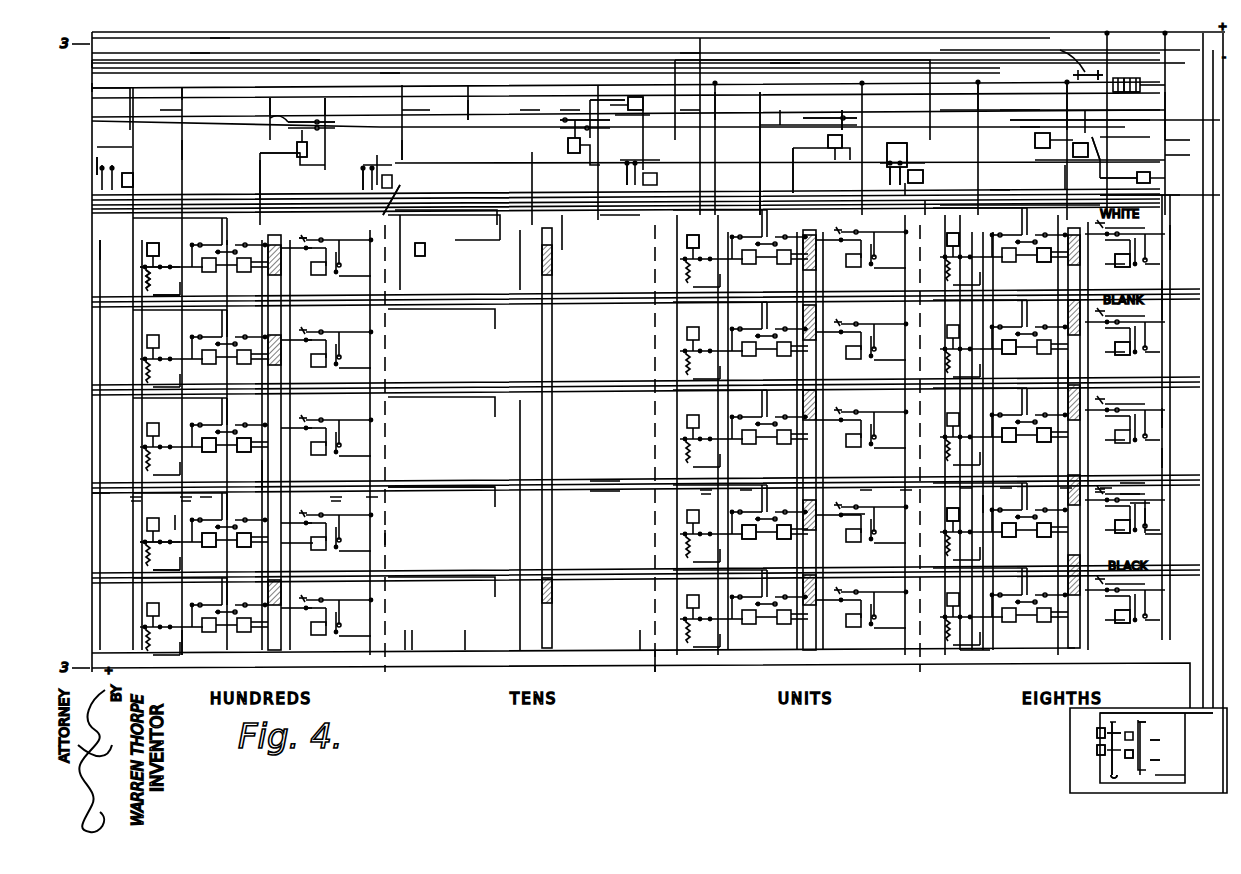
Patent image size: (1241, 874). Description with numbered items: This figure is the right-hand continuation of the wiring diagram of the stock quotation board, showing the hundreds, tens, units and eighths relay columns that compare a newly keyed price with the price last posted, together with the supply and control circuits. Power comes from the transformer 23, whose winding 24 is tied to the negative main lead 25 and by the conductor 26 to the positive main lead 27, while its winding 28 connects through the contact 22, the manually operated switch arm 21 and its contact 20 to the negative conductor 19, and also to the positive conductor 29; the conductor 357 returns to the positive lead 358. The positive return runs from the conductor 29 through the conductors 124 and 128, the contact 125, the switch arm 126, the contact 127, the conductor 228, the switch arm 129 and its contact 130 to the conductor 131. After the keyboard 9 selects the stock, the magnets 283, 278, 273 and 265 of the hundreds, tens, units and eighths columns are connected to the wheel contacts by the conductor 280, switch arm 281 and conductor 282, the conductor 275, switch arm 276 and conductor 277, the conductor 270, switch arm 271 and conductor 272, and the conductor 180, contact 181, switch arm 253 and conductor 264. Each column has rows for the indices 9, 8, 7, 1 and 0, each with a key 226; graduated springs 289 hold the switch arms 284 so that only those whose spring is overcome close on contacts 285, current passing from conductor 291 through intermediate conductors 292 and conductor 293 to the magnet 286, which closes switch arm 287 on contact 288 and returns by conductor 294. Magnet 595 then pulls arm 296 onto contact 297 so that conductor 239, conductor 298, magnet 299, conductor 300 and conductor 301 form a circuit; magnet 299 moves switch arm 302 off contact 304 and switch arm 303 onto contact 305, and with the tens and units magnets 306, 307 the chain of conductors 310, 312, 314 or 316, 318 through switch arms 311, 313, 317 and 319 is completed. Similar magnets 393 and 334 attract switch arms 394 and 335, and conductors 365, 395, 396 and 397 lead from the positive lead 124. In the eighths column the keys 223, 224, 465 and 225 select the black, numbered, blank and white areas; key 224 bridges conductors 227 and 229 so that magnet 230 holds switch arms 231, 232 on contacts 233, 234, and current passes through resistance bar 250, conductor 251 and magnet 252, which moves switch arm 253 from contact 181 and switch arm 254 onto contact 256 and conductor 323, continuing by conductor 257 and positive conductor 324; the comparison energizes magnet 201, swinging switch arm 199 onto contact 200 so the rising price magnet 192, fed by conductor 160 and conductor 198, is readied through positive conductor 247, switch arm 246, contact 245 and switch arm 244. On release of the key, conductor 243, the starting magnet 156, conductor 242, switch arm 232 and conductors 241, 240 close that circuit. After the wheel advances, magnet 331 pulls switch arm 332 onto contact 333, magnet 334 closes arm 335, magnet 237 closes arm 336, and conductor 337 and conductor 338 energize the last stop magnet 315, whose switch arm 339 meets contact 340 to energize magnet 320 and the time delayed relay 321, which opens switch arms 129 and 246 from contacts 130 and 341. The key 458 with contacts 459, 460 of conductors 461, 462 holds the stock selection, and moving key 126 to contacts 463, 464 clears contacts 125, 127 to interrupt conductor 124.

The bus conductor 180 is at (92, 67).
The conductor 280 is at (92, 88).
The conductor 198 is at (200, 56).
The conductor 160 is at (218, 50).
The conductor 270 is at (312, 60).
The conductor 275 is at (390, 73).
The conductor 192 is at (182, 92).
The contact 302 is at (275, 98).
The contact 303 is at (325, 98).
The conductor 310 is at (420, 110).
The conductor 316 is at (468, 100).
The conductor 311 is at (532, 110).
The conductor 201 is at (565, 110).
The conductor 199 is at (605, 100).
The conductor 357 is at (690, 50).
The conductor 358 is at (790, 50).
The conductor 318 is at (690, 110).
The conductor 312 is at (730, 110).
The conductor 319 is at (765, 92).
The conductor 313 is at (842, 110).
The conductor 314 is at (895, 140).
The conductor 19 is at (978, 88).
The conductor 20 is at (1067, 80).
The switch 21 is at (1080, 65).
The switch contact 22 is at (1100, 72).
The switch contact 23 is at (1125, 78).
The conductor 24 is at (1150, 78).
The conductor 25 is at (1180, 65).
The conductor 27 is at (1195, 50).
The conductor 26 is at (1165, 100).
The conductor 28 is at (1125, 92).
The conductor 131 is at (1150, 120).
The conductor 324 is at (165, 110).
The conductor 291 is at (182, 150).
The relay 281 is at (97, 157).
The relay coil 257 is at (140, 188).
The relay contact 304 is at (270, 118).
The relay contact 305 is at (297, 148).
The conductor 299 is at (260, 155).
The conductor 300 is at (260, 178).
The relay 276 is at (363, 170).
The conductor 298 is at (450, 163).
The relay coil 306 is at (568, 148).
The contact 317 is at (560, 126).
The conductor 277 is at (398, 195).
The relay coil 200 is at (630, 115).
The relay 271 is at (620, 176).
The relay coil 247 is at (803, 125).
The relay contact 307 is at (828, 145).
The conductor 323 is at (835, 190).
The relay 253 is at (895, 140).
The relay 181 is at (890, 165).
The contact 254 is at (910, 150).
The contact 256 is at (923, 170).
The conductor 252 is at (922, 190).
The conductor 339 is at (1030, 110).
The conductor 239 is at (1067, 110).
The conductor 340 is at (1035, 127).
The relay coil 315 is at (1035, 140).
The conductor 320 is at (1073, 152).
The conductor 251 is at (1000, 190).
The conductor 321 is at (1065, 175).
The conductor 243 is at (1100, 180).
The relay coil 130 is at (1088, 150).
The contact 341 is at (1150, 135).
The relay contact 129 is at (1100, 155).
The conductor 246 is at (1190, 140).
The conductor 244 is at (1190, 155).
The relay coil 156 is at (1165, 175).
The conductor 245 is at (1180, 195).
The conductor 228 is at (1175, 240).
The conductor 264 is at (930, 205).
The relay coil 265 is at (955, 233).
The conductor 282 is at (100, 238).
The relay coil 283 is at (147, 248).
The contact 284 is at (140, 267).
The resistor 289 is at (145, 280).
The conductor 292 is at (180, 295).
The digit position 9 is at (580, 232).
The switch contact 226 is at (325, 246).
The relay 278 is at (420, 243).
The conductor 272 is at (622, 215).
The relay coil 273 is at (708, 224).
The digit position 8 is at (580, 323).
The digit position 7 is at (712, 405).
The digit position 1 is at (711, 496).
The digit position 0 is at (580, 590).
The conductor 365 is at (600, 481).
The conductor 395 is at (610, 491).
The conductor 396 is at (432, 498).
The conductor 230 is at (385, 537).
The conductor 397 is at (100, 500).
The contact 285 is at (175, 520).
The contact 294 is at (150, 542).
The conductor 293 is at (180, 572).
The relay coil 287 is at (215, 480).
The relay coil 297 is at (252, 483).
The conductor 296 is at (270, 470).
The relay coil 286 is at (210, 548).
The relay coil 288 is at (243, 548).
The conductor 595 is at (290, 545).
The conductor 301 is at (195, 644).
The relay coil 394 is at (755, 480).
The relay coil 393 is at (777, 540).
The conductor 332 is at (865, 514).
The relay coil 331 is at (960, 508).
The contact 333 is at (985, 496).
The relay coil 335 is at (1020, 481).
The relay coil 336 is at (1045, 481).
The relay coil 334 is at (1008, 540).
The relay coil 237 is at (1043, 540).
The relay coil 337 is at (1050, 278).
The relay coil 225 is at (1130, 258).
The conductor 128 is at (1162, 298).
The commutator segment 250 is at (1068, 370).
The relay coil 338 is at (1020, 410).
The relay coil 465 is at (1125, 354).
The conductor 242 is at (1165, 418).
The conductor 240 is at (1160, 458).
The conductor 229 is at (1140, 483).
The conductor 231 is at (1150, 503).
The contact 232 is at (1150, 513).
The contact 234 is at (1150, 528).
The conductor 233 is at (1160, 538).
The switch 224 is at (1105, 492).
The contact 241 is at (1130, 492).
The relay coil 227 is at (1122, 530).
The relay coil 223 is at (1118, 612).
The conductor 29 is at (655, 668).
The conductor 124 is at (975, 652).
The contact arm 463 is at (1112, 722).
The contact bar 459 is at (1140, 725).
The contact 127 is at (1097, 730).
The contact 126 is at (1108, 738).
The contact 125 is at (1097, 750).
The contact 458 is at (1150, 740).
The contact 460 is at (1150, 760).
The contact 462 is at (1125, 758).
The conductor 461 is at (1203, 713).
The pivot 464 is at (1112, 778).